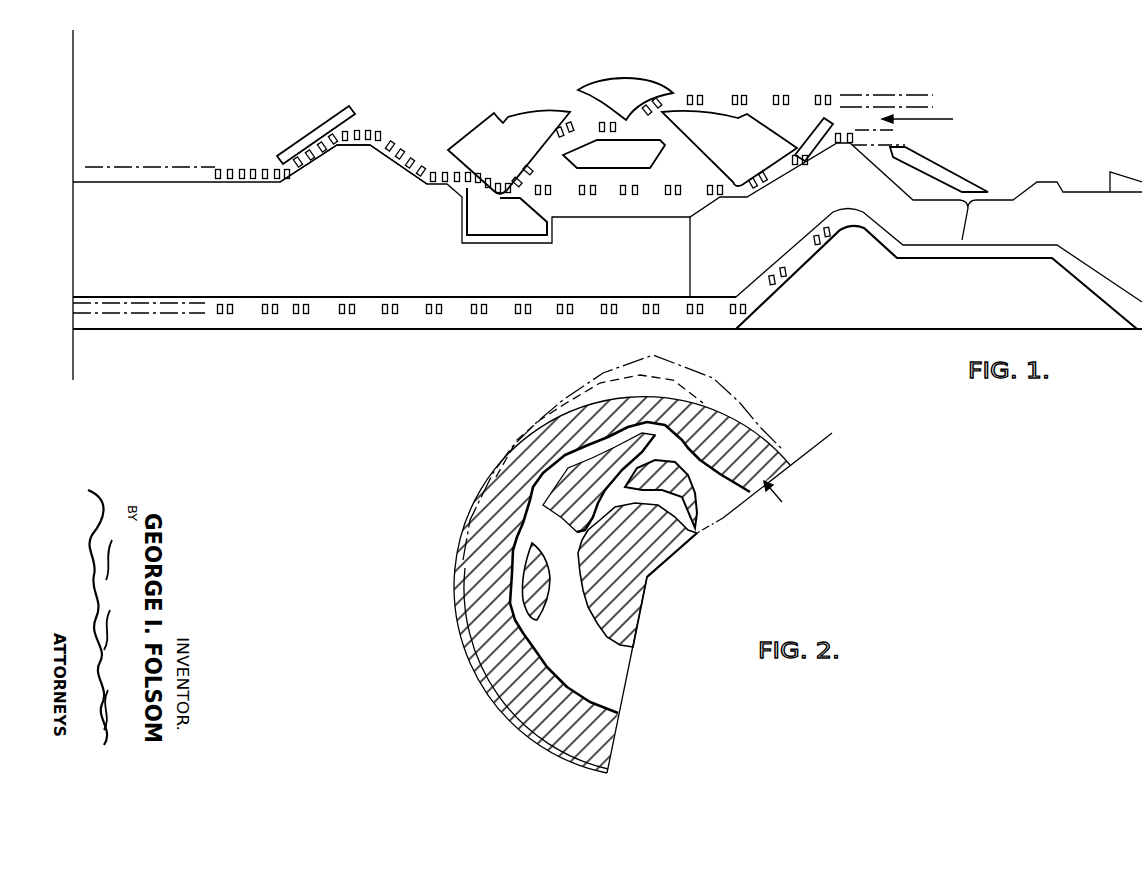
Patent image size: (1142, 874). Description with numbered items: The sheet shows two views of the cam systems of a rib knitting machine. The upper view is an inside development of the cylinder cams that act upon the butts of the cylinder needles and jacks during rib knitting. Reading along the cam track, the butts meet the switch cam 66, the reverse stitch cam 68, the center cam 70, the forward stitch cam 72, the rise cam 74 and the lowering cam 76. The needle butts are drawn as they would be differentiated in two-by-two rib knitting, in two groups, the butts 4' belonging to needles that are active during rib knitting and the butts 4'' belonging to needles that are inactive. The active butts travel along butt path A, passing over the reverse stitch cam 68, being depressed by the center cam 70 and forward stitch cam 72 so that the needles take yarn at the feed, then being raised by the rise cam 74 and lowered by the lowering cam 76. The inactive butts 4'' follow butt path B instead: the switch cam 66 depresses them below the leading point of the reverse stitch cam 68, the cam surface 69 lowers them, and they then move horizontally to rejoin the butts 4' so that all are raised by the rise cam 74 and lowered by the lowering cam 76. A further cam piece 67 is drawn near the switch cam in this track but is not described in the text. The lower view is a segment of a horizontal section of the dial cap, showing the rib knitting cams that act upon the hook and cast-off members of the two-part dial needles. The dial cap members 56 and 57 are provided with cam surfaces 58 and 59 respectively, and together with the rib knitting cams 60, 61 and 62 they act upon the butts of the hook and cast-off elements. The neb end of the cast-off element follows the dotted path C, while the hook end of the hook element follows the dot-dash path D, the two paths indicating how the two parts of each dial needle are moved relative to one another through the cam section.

In FIG. 1, the lowering cam 76 is at (317, 135).
In FIG. 1, the rise cam 74 is at (405, 162).
In FIG. 1, the forward stitch cam 72 is at (509, 151).
In FIG. 1, the center cam 70 is at (625, 99).
In FIG. 1, the reverse stitch cam 68 is at (729, 148).
In FIG. 1, the switch cam 66 is at (813, 142).
In FIG. 1, the vane 67 is at (944, 172).
In FIG. 1, the cam surface 69 is at (778, 165).
In FIG. 1, the needle butts (active group) 4' is at (759, 83).
In FIG. 1, the needle butts (inactive group) 4'' is at (629, 175).
In FIG. 1, the butt path A is at (906, 95).
In FIG. 1, the butt path B is at (898, 129).
In FIG. 2, the dial cap member 56 is at (768, 477).
In FIG. 2, the dial cap member 57 is at (636, 602).
In FIG. 2, the cam surface 58 is at (692, 436).
In FIG. 2, the cam surface 59 is at (578, 541).
In FIG. 2, the rib knitting cam 60 is at (661, 494).
In FIG. 2, the rib knitting cam 61 is at (599, 482).
In FIG. 2, the rib knitting cam 62 is at (536, 581).
In FIG. 2, the dotted path C is at (672, 380).
In FIG. 2, the dot-dash path D is at (720, 395).